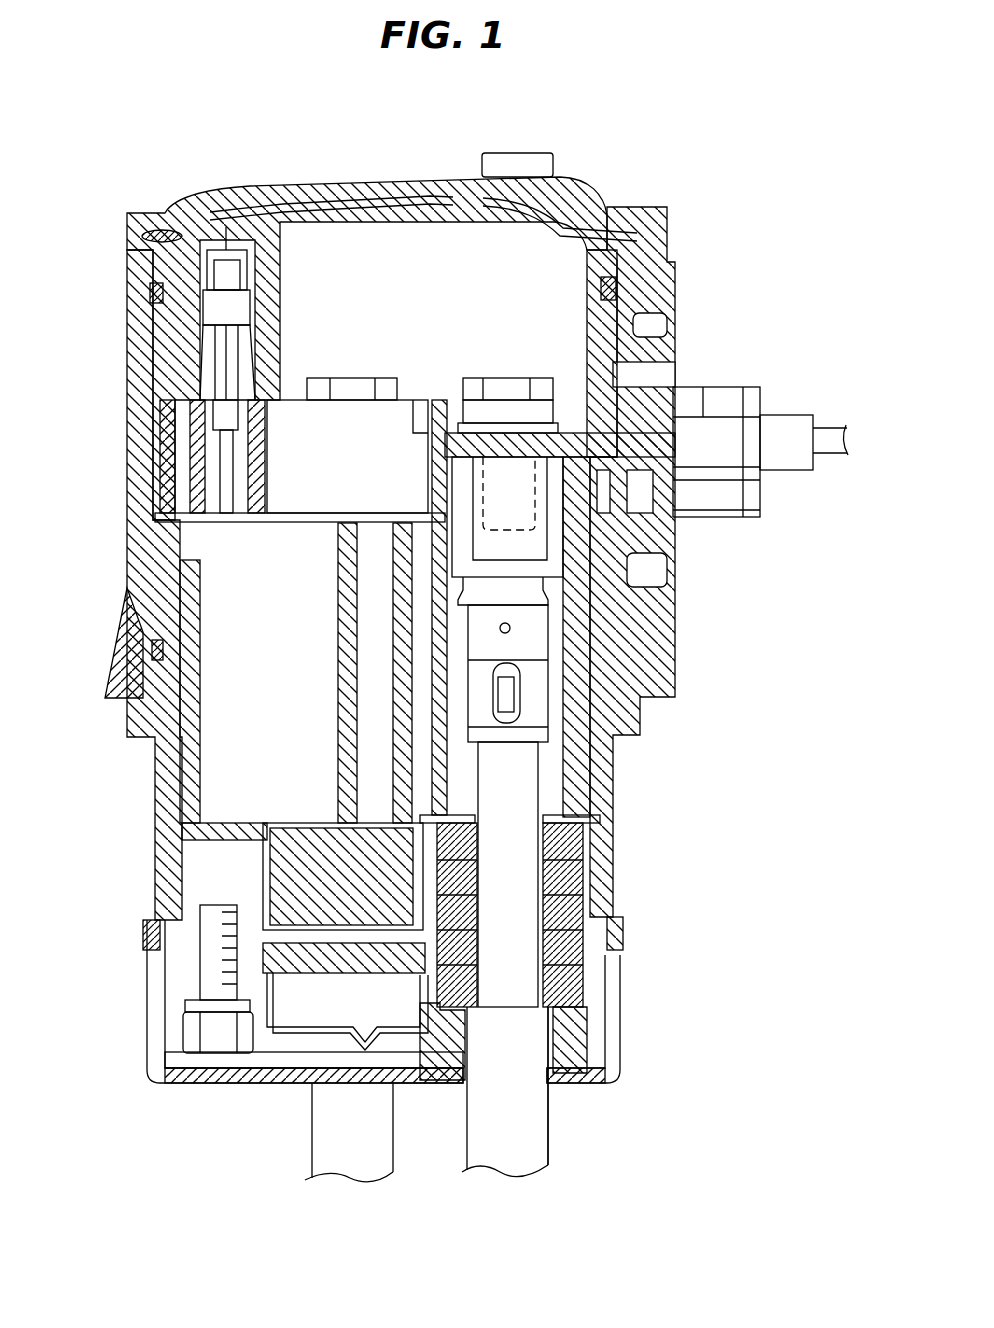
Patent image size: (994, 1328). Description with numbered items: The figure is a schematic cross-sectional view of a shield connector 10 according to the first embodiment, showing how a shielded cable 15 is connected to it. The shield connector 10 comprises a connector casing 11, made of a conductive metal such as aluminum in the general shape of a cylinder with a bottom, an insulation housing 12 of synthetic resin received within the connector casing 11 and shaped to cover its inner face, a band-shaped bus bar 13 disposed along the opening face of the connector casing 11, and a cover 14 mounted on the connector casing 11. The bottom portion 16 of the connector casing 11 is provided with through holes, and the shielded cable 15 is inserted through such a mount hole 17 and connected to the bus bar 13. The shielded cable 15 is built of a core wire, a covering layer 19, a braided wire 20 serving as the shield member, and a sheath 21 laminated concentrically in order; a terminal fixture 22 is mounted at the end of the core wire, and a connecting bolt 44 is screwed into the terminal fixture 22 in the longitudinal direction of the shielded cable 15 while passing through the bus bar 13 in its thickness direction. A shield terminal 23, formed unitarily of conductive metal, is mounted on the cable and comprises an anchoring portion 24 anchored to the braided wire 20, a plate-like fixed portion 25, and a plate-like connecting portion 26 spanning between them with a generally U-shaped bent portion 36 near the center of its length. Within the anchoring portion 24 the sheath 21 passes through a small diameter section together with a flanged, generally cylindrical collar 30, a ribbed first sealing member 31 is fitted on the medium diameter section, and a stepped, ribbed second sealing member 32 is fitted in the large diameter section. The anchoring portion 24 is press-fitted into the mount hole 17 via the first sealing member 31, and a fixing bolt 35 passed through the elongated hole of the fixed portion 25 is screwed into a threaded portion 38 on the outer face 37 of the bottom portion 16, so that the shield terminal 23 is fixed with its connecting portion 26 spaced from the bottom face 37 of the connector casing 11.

The shield connector 10 is at (657, 175).
The connector casing 11 is at (157, 768).
The insulation housing 12 is at (293, 857).
The bus bar 13 is at (567, 397).
The cover 14 is at (388, 185).
The shielded cable 15 is at (312, 1145).
The bottom portion 16 is at (322, 960).
The mount hole 17 is at (610, 856).
The covering layer 19 is at (522, 990).
The braided wire 20 is at (503, 975).
The sheath 21 is at (555, 1098).
The terminal fixture 22 is at (447, 508).
The shield terminal 23 is at (428, 1040).
The anchoring portion 24 is at (595, 972).
The fixed portion 25 is at (265, 1060).
The connecting portion 26 is at (332, 1040).
The collar 30 is at (565, 832).
The first sealing member 31 is at (580, 890).
The second sealing member 32 is at (583, 1023).
The fixing bolt 35 is at (215, 1040).
The bent portion 36 is at (366, 1040).
The outer face 37 is at (378, 870).
The threaded portion 38 is at (152, 968).
The connecting bolt 44 is at (505, 378).